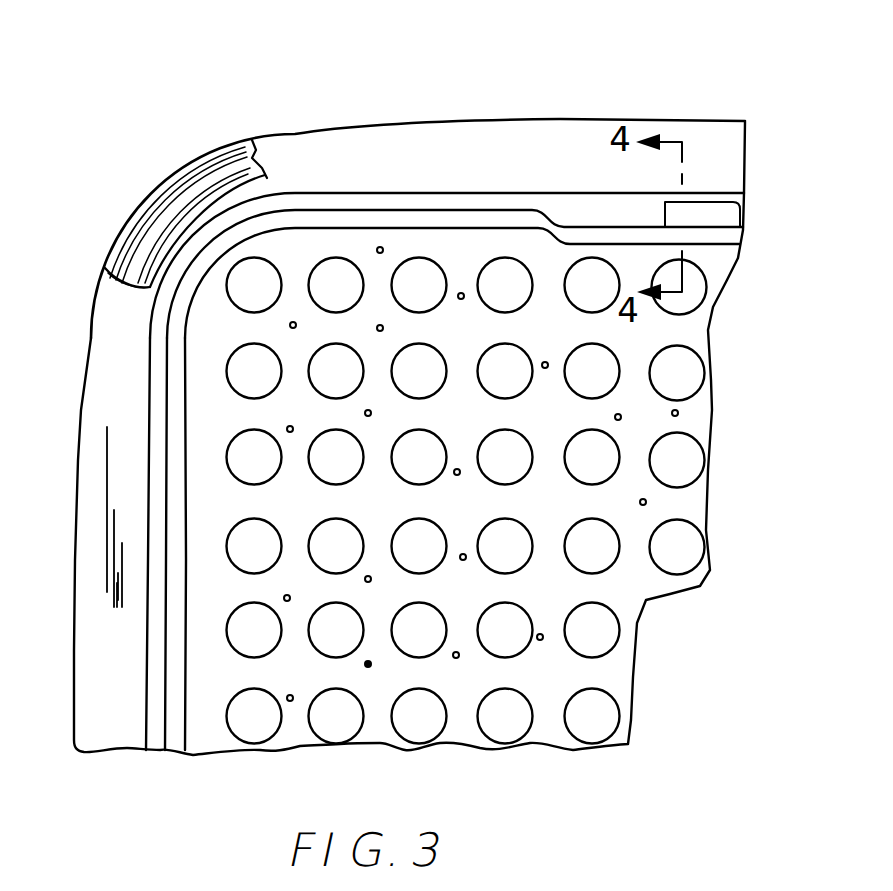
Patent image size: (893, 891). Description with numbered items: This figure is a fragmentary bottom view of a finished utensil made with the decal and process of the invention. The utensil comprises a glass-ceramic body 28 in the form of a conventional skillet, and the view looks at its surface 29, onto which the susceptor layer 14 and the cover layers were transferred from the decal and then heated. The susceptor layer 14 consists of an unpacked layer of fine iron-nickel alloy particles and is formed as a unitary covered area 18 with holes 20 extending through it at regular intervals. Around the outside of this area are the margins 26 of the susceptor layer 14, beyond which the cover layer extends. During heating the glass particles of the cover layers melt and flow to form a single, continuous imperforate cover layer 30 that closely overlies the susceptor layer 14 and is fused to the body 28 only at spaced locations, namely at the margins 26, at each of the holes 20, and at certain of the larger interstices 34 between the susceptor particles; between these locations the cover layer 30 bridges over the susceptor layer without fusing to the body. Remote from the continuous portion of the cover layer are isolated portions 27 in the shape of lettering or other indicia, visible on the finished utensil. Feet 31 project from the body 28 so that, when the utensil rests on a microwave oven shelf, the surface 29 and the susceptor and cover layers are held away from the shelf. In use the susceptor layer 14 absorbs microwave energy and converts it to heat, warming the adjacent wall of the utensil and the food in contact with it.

The susceptor layer 14 is at (512, 237).
The unitary covered area 18 is at (457, 238).
The holes 20 is at (422, 272).
The margins 26 is at (490, 218).
The isolated portions 27 is at (692, 201).
The glass-ceramic body 28 is at (697, 92).
The surface 29 is at (708, 135).
The cover layer 30 is at (292, 182).
The feet 31 is at (166, 210).
The larger interstices 34 is at (380, 247).